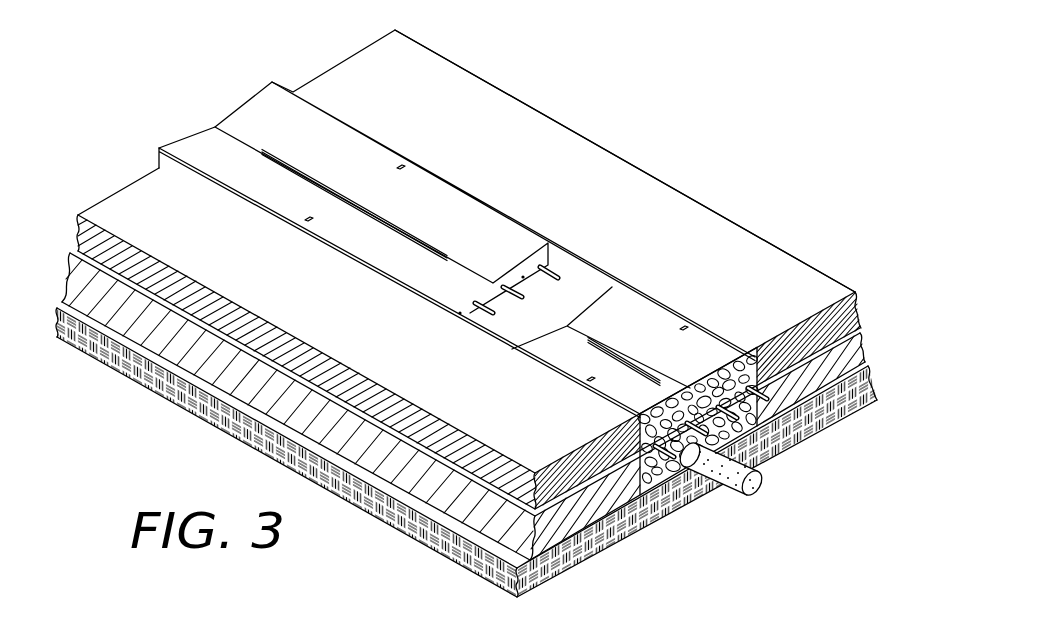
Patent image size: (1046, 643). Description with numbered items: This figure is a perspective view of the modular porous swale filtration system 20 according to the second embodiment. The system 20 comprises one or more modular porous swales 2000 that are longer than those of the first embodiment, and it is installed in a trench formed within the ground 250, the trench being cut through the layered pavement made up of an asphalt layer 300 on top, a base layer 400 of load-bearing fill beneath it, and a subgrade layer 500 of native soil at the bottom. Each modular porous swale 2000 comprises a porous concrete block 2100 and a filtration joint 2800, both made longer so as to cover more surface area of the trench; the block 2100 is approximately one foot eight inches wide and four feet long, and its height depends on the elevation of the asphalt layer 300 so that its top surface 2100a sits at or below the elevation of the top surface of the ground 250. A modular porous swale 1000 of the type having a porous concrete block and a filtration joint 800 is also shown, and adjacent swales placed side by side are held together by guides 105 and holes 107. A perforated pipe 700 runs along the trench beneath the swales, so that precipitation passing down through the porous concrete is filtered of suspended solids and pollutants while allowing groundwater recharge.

The modular porous swale filtration system 20 is at (742, 133).
The modular porous swale 2000 is at (289, 84).
The porous concrete block 2100 is at (215, 163).
The top surface 2100a is at (362, 162).
The filtration joint 2800 is at (421, 231).
The holes 107 is at (523, 272).
The guides 105 is at (558, 276).
The modular porous swale 1000 is at (645, 293).
The filtration joint 800 is at (631, 358).
The perforated pipe 700 is at (739, 493).
The ground 250 is at (52, 212).
The asphalt layer 300 is at (866, 290).
The base layer 400 is at (874, 325).
The subgrade layer 500 is at (880, 361).